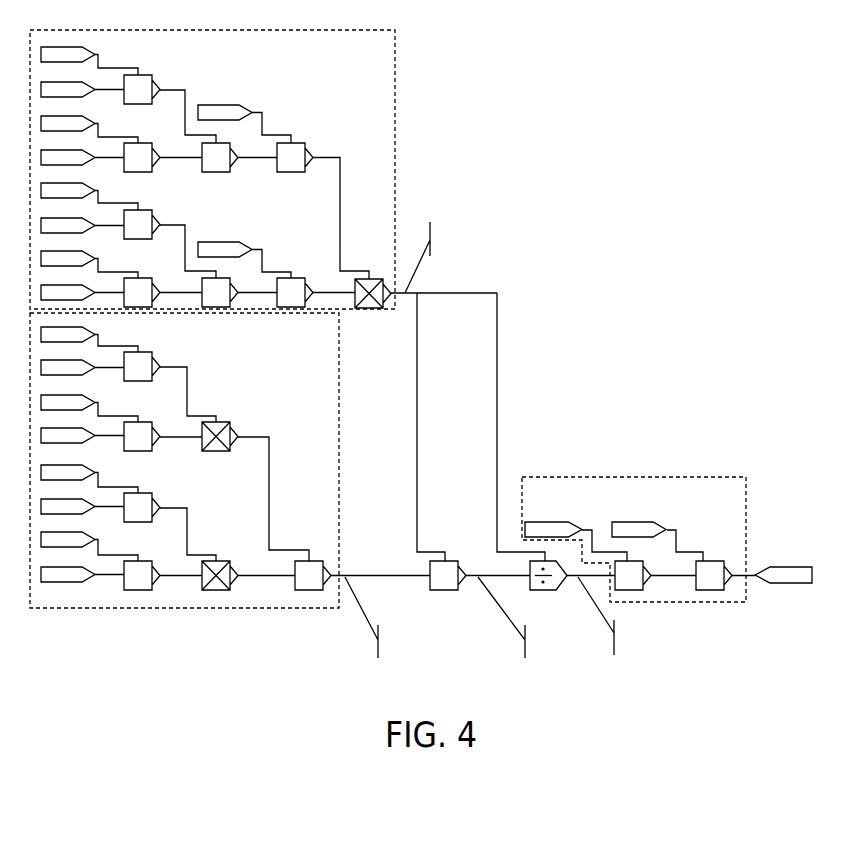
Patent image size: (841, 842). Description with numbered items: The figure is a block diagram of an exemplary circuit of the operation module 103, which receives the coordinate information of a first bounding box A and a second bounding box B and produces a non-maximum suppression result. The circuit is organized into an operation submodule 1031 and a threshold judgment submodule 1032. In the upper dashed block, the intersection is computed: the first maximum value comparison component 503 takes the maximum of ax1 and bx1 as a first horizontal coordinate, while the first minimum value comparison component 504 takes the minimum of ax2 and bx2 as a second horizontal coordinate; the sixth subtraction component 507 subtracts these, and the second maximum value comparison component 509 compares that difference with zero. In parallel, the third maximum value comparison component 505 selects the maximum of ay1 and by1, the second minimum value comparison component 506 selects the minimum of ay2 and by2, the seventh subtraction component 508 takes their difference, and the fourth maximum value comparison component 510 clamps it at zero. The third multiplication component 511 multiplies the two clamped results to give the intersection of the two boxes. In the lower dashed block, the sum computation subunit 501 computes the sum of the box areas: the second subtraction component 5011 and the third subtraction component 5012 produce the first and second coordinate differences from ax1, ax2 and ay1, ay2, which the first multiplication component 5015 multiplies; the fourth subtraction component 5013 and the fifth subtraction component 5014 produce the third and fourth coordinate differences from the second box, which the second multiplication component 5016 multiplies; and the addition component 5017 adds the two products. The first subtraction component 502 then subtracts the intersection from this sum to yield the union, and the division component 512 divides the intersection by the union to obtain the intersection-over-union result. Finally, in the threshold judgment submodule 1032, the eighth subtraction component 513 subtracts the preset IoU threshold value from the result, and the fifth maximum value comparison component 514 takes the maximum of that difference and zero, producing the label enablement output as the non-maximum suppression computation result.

The operation module 103 is at (585, 222).
The operation submodule 1031 is at (395, 117).
The threshold judgment submodule 1032 is at (607, 477).
The sum computation subunit 501 is at (342, 432).
The first subtraction component 502 is at (448, 569).
The first maximum value comparison component 503 is at (142, 83).
The first minimum value comparison component 504 is at (142, 151).
The third maximum value comparison component 505 is at (142, 218).
The second minimum value comparison component 506 is at (142, 286).
The sixth subtraction component 507 is at (220, 151).
The seventh subtraction component 508 is at (220, 286).
The second maximum value comparison component 509 is at (295, 151).
The fourth maximum value comparison component 510 is at (295, 286).
The third multiplication component 511 is at (373, 287).
The division component 512 is at (548, 569).
The eighth subtraction component 513 is at (633, 569).
The fifth maximum value comparison component 514 is at (714, 569).
The second subtraction component 5011 is at (144, 360).
The third subtraction component 5012 is at (144, 430).
The fourth subtraction component 5013 is at (144, 501).
The fifth subtraction component 5014 is at (144, 569).
The first multiplication component 5015 is at (220, 430).
The second multiplication component 5016 is at (220, 569).
The addition component 5017 is at (313, 569).